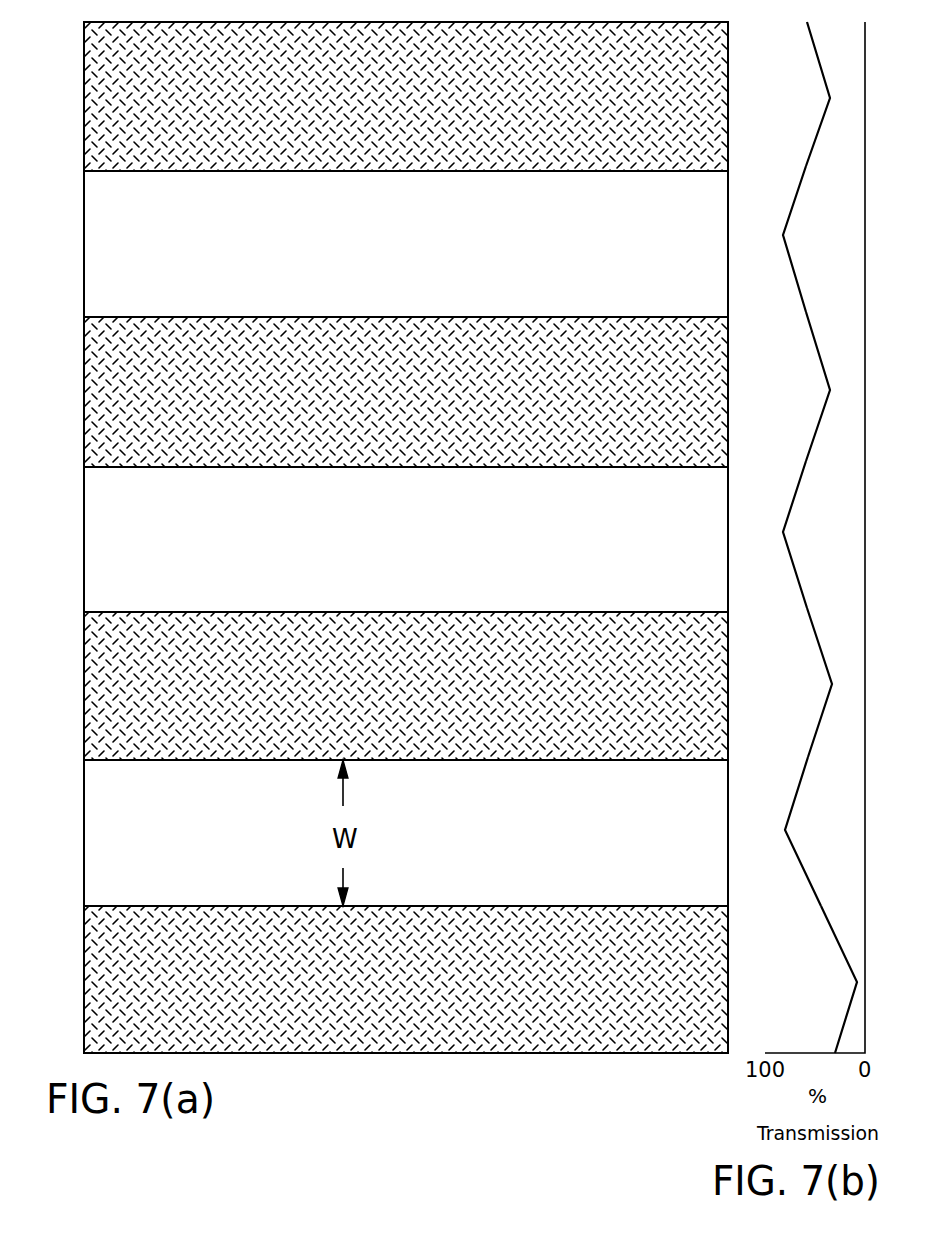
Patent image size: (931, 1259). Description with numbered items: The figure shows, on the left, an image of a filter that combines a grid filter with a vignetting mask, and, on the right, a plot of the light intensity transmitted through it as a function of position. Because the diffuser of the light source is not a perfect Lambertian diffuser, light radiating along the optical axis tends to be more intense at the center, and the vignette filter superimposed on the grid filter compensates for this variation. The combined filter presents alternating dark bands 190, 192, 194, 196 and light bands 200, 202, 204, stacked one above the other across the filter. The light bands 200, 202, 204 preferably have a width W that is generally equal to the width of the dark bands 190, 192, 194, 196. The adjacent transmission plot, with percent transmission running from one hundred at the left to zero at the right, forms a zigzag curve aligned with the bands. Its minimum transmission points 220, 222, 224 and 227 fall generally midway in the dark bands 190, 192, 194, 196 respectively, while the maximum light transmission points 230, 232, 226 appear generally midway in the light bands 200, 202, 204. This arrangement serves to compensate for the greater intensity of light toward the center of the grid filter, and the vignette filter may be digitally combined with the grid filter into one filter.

The dark band 190 is at (84, 958).
The dark band 192 is at (84, 695).
The dark band 194 is at (84, 427).
The dark band 196 is at (84, 125).
The light band 200 is at (84, 840).
The light band 202 is at (84, 559).
The light band 204 is at (84, 283).
The minimum transmission point 220 is at (857, 982).
The minimum transmission point 222 is at (832, 684).
The minimum transmission point 224 is at (830, 390).
The maximum light transmission 226 is at (783, 235).
The minimum transmission point 227 is at (830, 98).
The maximum light transmission 230 is at (785, 830).
The maximum light transmission 232 is at (783, 532).